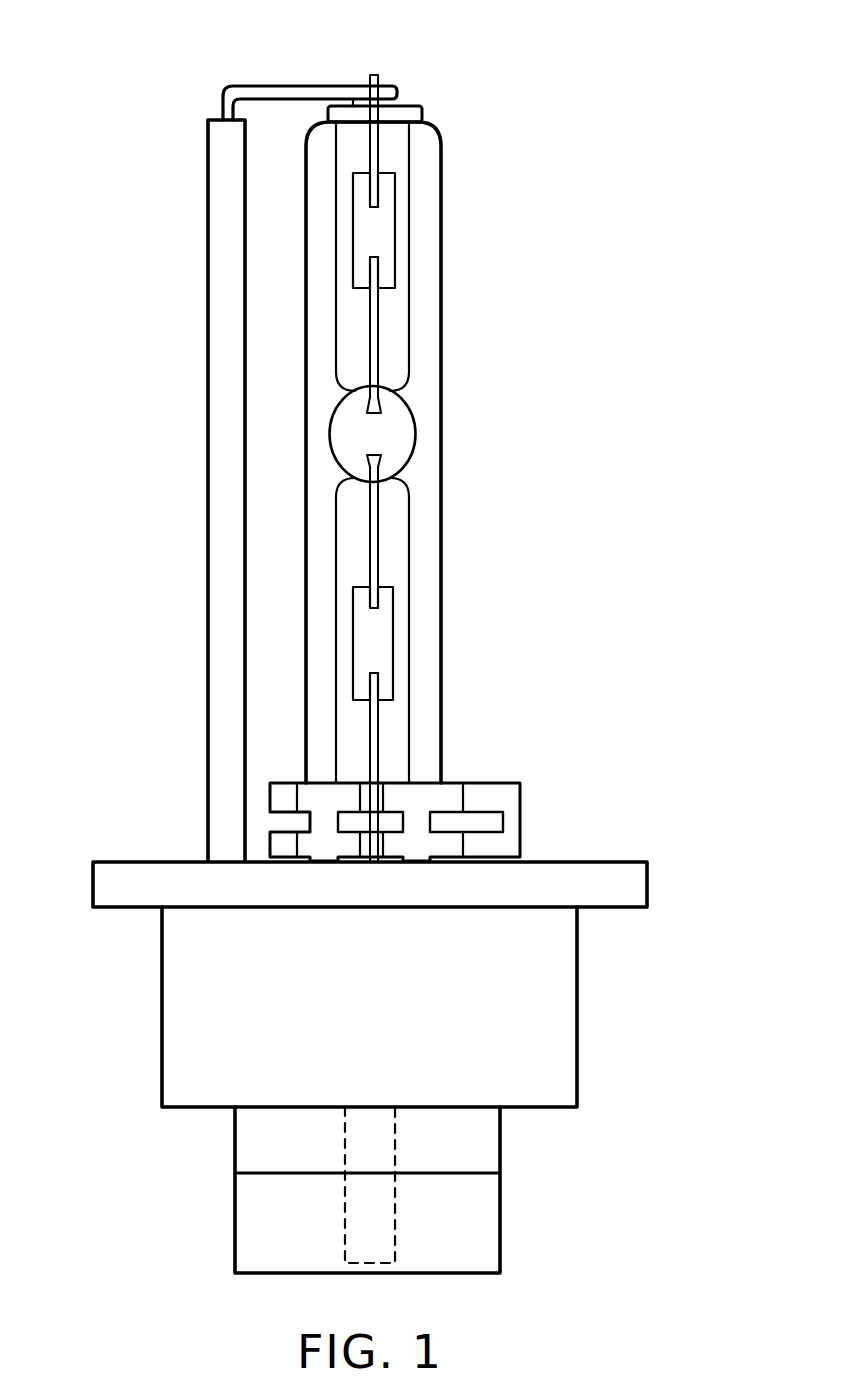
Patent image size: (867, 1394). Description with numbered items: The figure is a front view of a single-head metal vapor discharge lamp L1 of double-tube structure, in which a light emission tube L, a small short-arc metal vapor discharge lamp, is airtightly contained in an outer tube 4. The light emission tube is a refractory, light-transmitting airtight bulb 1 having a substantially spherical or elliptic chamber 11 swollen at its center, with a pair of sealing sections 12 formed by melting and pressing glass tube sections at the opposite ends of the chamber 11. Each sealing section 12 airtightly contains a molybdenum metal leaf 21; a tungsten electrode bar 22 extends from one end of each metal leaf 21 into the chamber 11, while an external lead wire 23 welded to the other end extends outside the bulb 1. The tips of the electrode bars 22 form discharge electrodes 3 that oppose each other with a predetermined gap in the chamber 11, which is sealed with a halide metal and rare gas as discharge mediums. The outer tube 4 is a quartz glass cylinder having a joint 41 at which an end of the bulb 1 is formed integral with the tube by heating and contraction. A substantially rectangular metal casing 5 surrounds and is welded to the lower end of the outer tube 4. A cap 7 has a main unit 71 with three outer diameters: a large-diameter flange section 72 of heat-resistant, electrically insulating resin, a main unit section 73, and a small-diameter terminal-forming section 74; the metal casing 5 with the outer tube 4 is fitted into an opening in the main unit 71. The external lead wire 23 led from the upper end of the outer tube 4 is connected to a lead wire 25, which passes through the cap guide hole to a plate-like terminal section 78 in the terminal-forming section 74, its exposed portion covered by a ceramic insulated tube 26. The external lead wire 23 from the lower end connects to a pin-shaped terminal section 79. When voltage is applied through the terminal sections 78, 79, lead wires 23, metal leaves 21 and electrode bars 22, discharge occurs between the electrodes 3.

The metal vapor discharge lamp L1 is at (417, 88).
The light emission tube L is at (327, 390).
The bulb 1 is at (330, 473).
The chamber 11 is at (417, 434).
The sealing section 12 is at (345, 228).
The discharge electrode 3 is at (378, 411).
The metal leaf 21 is at (385, 228).
The electrode bar 22 is at (378, 325).
The external lead wire 23 is at (378, 158).
The lead wire 25 is at (279, 86).
The insulated tube 26 is at (208, 500).
The outer tube 4 is at (307, 455).
The joint 41 is at (422, 108).
The metal casing 5 is at (272, 800).
The cap 7 is at (143, 987).
The main unit 71 is at (671, 937).
The flange section 72 is at (606, 890).
The main unit section 73 is at (553, 1012).
The terminal-forming section 74 is at (477, 1200).
The plate-like terminal section 78 is at (245, 1142).
The pin-shaped terminal section 79 is at (347, 1217).